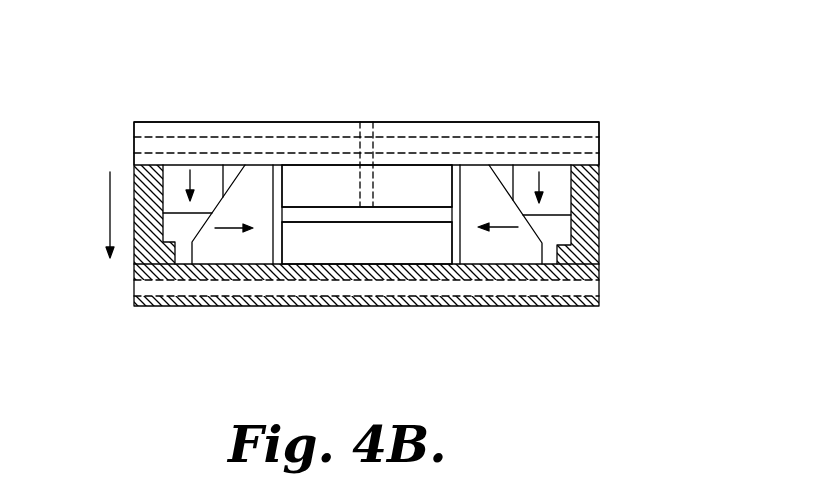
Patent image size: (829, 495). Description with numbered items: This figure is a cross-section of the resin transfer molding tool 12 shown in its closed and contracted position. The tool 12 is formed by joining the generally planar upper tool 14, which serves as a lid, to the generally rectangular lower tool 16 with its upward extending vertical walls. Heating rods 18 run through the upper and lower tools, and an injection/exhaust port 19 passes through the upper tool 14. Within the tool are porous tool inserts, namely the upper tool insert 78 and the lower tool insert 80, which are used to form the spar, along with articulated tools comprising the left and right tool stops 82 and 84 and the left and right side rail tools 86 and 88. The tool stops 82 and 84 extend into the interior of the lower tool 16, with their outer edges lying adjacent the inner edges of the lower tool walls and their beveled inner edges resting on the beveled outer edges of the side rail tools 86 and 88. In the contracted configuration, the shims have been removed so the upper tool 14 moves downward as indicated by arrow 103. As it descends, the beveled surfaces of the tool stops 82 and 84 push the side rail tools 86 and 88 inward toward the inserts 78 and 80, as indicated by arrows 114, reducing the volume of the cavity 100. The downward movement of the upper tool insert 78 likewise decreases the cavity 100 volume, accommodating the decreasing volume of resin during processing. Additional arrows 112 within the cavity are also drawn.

The RTM mold or tool 12 is at (634, 79).
The upper tool 14 is at (133, 116).
The lower tool 16 is at (126, 280).
The heating rods 18 is at (600, 143).
The injection/exhaust port 19 is at (365, 122).
The upper tool insert 78 is at (313, 178).
The lower tool insert 80 is at (380, 252).
The left tool stop 82 is at (170, 175).
The right tool stop 84 is at (555, 204).
The left side rail tool 86 is at (255, 245).
The right side rail tool 88 is at (528, 253).
The cavity 100 is at (405, 217).
The arrow 103 is at (110, 218).
The downward fluid flow 112 is at (208, 180).
The arrows 114 is at (220, 232).